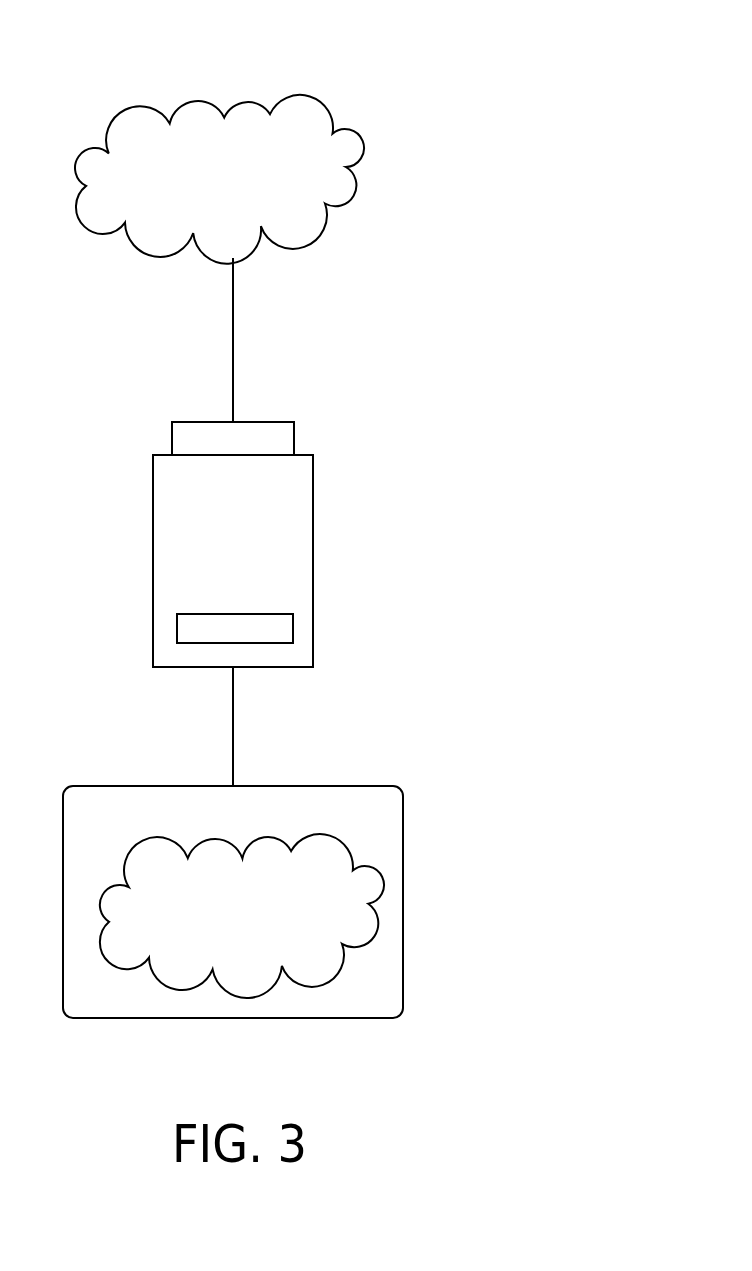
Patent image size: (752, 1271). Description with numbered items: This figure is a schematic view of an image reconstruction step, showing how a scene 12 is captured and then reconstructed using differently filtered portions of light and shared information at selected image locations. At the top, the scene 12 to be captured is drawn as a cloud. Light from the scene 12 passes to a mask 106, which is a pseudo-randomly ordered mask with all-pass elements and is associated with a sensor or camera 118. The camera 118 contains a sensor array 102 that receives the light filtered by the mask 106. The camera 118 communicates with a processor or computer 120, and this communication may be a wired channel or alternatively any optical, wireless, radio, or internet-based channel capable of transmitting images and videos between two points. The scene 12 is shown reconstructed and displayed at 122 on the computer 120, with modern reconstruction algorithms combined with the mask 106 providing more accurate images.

The scene 12 is at (329, 91).
The mask 106 is at (268, 422).
The camera 118 is at (338, 540).
The sensor array 102 is at (220, 614).
The computer 120 is at (436, 886).
The reconstructed image 122 is at (288, 1000).